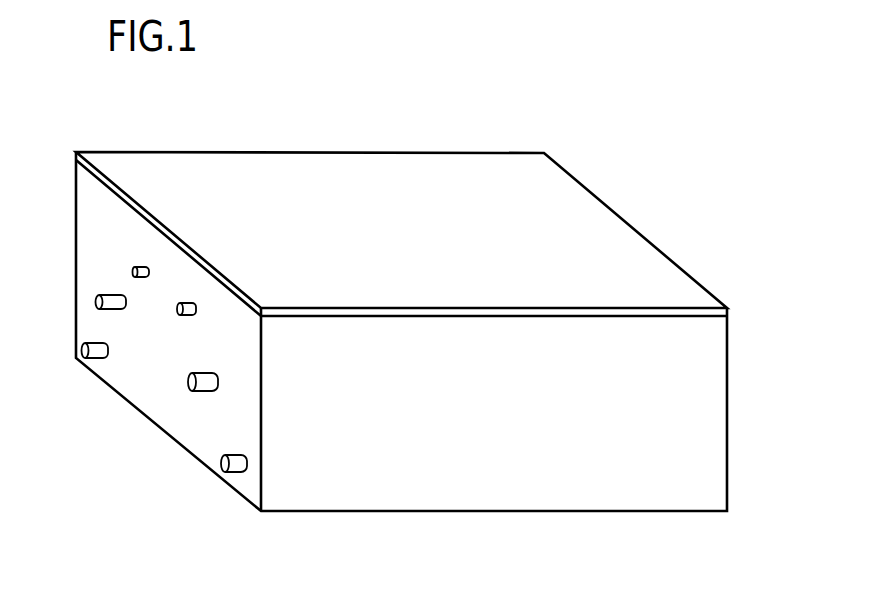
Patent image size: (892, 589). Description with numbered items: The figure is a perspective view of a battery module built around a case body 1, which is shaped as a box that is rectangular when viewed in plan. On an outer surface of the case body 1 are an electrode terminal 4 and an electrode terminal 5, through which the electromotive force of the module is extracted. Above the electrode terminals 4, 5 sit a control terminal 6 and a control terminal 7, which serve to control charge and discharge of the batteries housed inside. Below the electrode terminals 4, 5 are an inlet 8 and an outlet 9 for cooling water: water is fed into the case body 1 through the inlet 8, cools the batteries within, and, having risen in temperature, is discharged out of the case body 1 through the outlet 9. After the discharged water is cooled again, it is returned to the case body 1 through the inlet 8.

The case body 1 is at (710, 433).
The electrode terminal 4 is at (96, 300).
The electrode terminal 5 is at (200, 391).
The control terminal 6 is at (139, 268).
The control terminal 7 is at (187, 305).
The inlet 8 is at (95, 358).
The outlet 9 is at (235, 472).